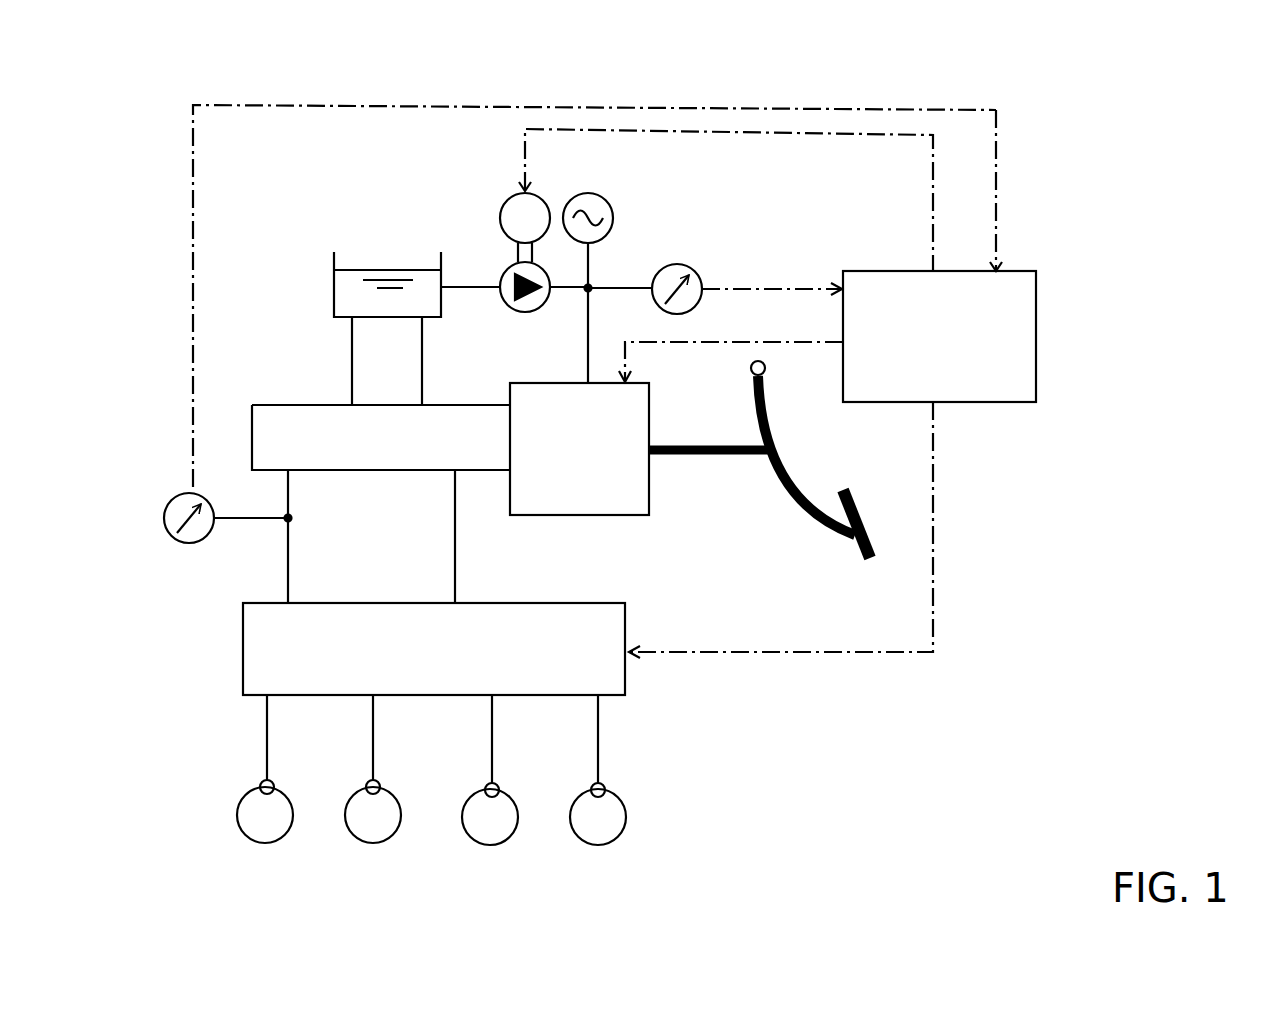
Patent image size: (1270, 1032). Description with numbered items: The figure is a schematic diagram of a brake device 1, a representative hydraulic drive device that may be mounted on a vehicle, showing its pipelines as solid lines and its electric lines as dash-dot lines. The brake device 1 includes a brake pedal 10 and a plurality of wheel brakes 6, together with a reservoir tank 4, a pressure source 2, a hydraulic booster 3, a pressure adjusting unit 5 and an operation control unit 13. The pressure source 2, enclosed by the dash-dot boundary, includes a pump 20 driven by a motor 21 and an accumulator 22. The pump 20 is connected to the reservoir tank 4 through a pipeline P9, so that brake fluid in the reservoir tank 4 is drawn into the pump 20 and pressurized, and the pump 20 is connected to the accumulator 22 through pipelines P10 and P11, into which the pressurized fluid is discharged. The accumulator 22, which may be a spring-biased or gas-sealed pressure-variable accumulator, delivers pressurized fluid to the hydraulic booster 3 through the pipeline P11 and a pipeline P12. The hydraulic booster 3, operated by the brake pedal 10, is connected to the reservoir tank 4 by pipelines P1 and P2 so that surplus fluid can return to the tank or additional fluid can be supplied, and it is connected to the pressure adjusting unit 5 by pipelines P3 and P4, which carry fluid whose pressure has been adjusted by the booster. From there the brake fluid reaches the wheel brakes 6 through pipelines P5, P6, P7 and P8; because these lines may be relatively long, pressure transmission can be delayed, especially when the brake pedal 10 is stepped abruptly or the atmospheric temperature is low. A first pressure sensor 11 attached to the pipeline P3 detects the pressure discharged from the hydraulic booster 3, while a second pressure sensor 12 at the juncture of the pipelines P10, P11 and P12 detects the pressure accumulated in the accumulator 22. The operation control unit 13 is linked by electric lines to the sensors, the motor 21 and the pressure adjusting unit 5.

The brake device 1 is at (1065, 131).
The pressure source 2 is at (594, 100).
The hydraulic booster 3 is at (640, 532).
The reservoir tank 4 is at (315, 253).
The pressure adjusting unit 5 is at (226, 678).
The wheel brakes 6 is at (280, 840).
The brake pedal 10 is at (812, 451).
The first pressure sensor 11 is at (190, 545).
The second pressure sensor 12 is at (703, 276).
The operation control unit 13 is at (1036, 338).
The pump 20 is at (503, 268).
The motor 21 is at (499, 208).
The accumulator 22 is at (612, 205).
The pipeline P1 is at (352, 348).
The pipeline P2 is at (422, 385).
The pipeline P3 is at (290, 547).
The pipeline P4 is at (457, 547).
The pipeline P5 is at (269, 740).
The pipeline P6 is at (375, 740).
The pipeline P7 is at (494, 742).
The pipeline P8 is at (600, 742).
The pipeline P9 is at (470, 289).
The pipeline P10 is at (572, 292).
The pipeline P11 is at (590, 266).
The pipeline P12 is at (590, 323).